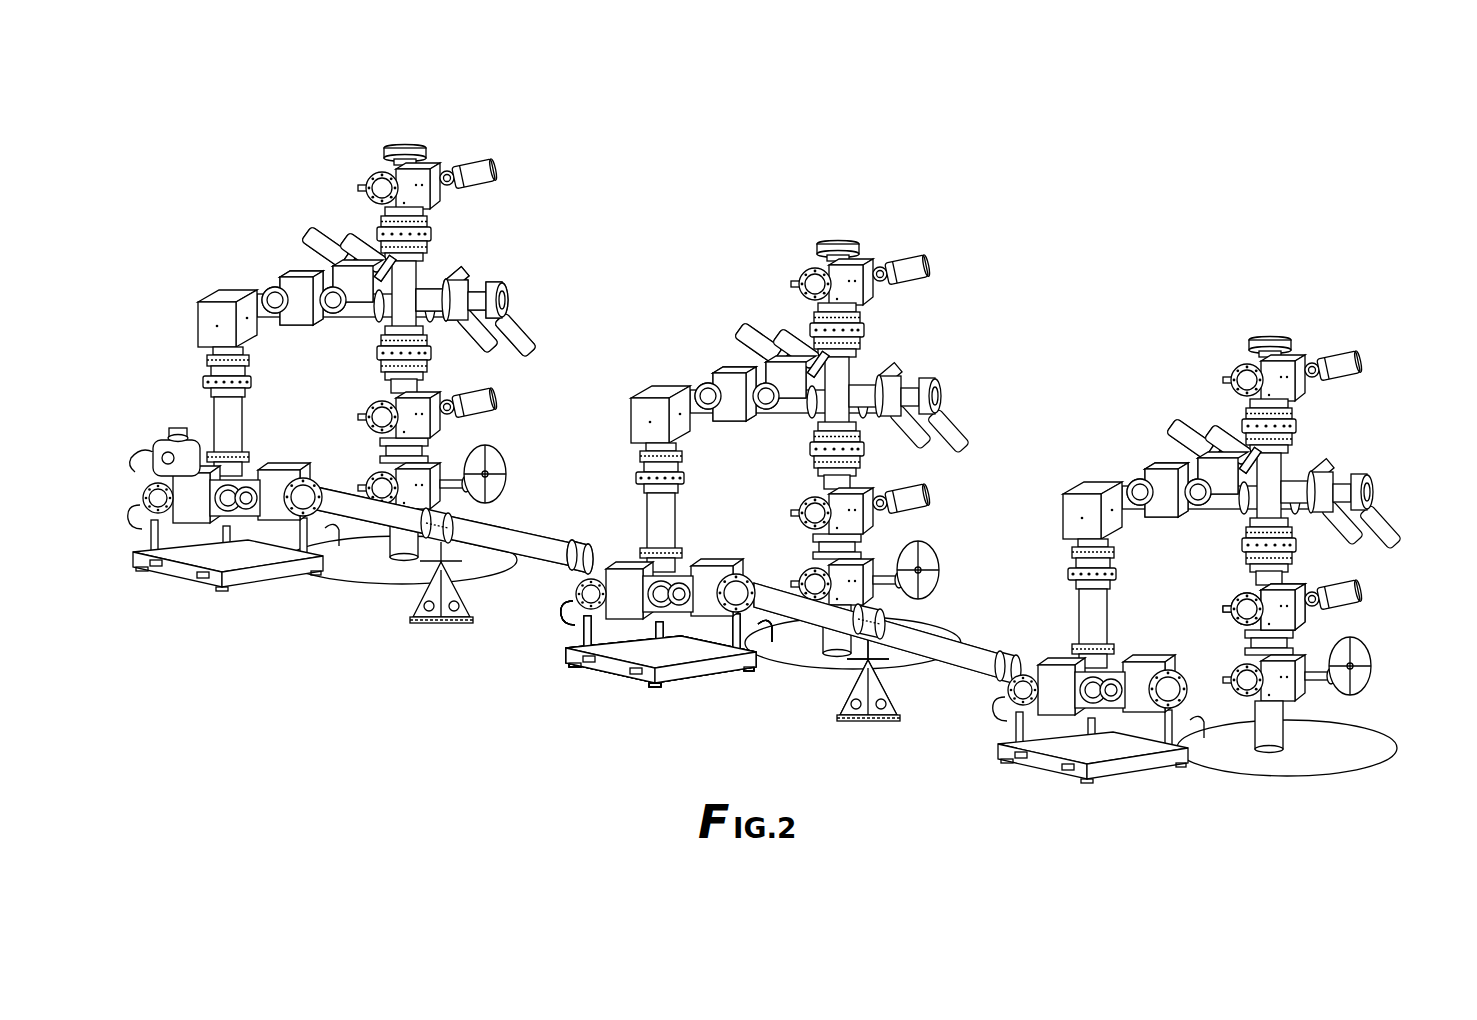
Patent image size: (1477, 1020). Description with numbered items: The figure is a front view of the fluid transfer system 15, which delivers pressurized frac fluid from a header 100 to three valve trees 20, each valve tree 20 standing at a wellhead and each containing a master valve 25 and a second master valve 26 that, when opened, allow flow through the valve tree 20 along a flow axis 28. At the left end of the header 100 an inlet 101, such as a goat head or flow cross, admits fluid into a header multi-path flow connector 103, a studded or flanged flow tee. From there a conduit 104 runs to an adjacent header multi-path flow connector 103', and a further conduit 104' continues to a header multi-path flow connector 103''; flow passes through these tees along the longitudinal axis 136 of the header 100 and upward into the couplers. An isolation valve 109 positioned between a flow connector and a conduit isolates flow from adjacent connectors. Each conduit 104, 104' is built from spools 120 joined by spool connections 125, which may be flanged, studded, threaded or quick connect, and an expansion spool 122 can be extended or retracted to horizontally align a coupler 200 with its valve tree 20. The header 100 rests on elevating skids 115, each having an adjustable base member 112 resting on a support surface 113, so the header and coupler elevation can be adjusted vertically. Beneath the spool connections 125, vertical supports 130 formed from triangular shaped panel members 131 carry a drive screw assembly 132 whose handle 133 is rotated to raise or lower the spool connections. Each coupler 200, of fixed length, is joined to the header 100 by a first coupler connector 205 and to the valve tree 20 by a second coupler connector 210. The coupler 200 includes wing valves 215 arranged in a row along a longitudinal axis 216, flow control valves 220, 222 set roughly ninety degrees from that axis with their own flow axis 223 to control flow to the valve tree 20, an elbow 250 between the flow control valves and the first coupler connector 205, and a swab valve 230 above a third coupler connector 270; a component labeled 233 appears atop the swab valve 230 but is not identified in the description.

The fluid transfer system 15 is at (1152, 183).
The valve tree 20 is at (365, 400).
The master valve 25 is at (440, 492).
The second master valve 26 is at (452, 395).
The flow axis 28 is at (1210, 588).
The header 100 is at (548, 588).
The inlet 101 is at (160, 440).
The header multi-path flow connector 103 is at (231, 567).
The header multi-path flow connector 103' is at (666, 658).
The header multi-path flow connector 103'' is at (1095, 751).
The conduit 104 is at (448, 516).
The conduit 104' is at (898, 616).
The isolation valve 109 is at (284, 465).
The adjustable base member 112 is at (690, 648).
The support surface 113 is at (590, 664).
The elevating skid 115 is at (700, 684).
The spool 120 is at (578, 542).
The expansion spool 122 is at (589, 552).
The spool connection 125 is at (418, 543).
The vertical support 130 is at (420, 600).
The triangular shaped panel member 131 is at (470, 601).
The drive screw assembly 132 is at (858, 704).
The handle 133 is at (858, 655).
The longitudinal axis 136 is at (342, 538).
The coupler 200 is at (205, 352).
The first coupler connector 205 is at (208, 390).
The second coupler connector 210 is at (378, 354).
The wing valve 215 is at (470, 300).
The longitudinal axis 216 is at (520, 308).
The flow control valve 220 is at (298, 272).
The flow control valve 222 is at (343, 266).
The flow axis 223 is at (1158, 538).
The swab valve 230 is at (438, 164).
The top flange 233 is at (412, 148).
The elbow 250 is at (203, 312).
The third coupler connector 270 is at (432, 233).